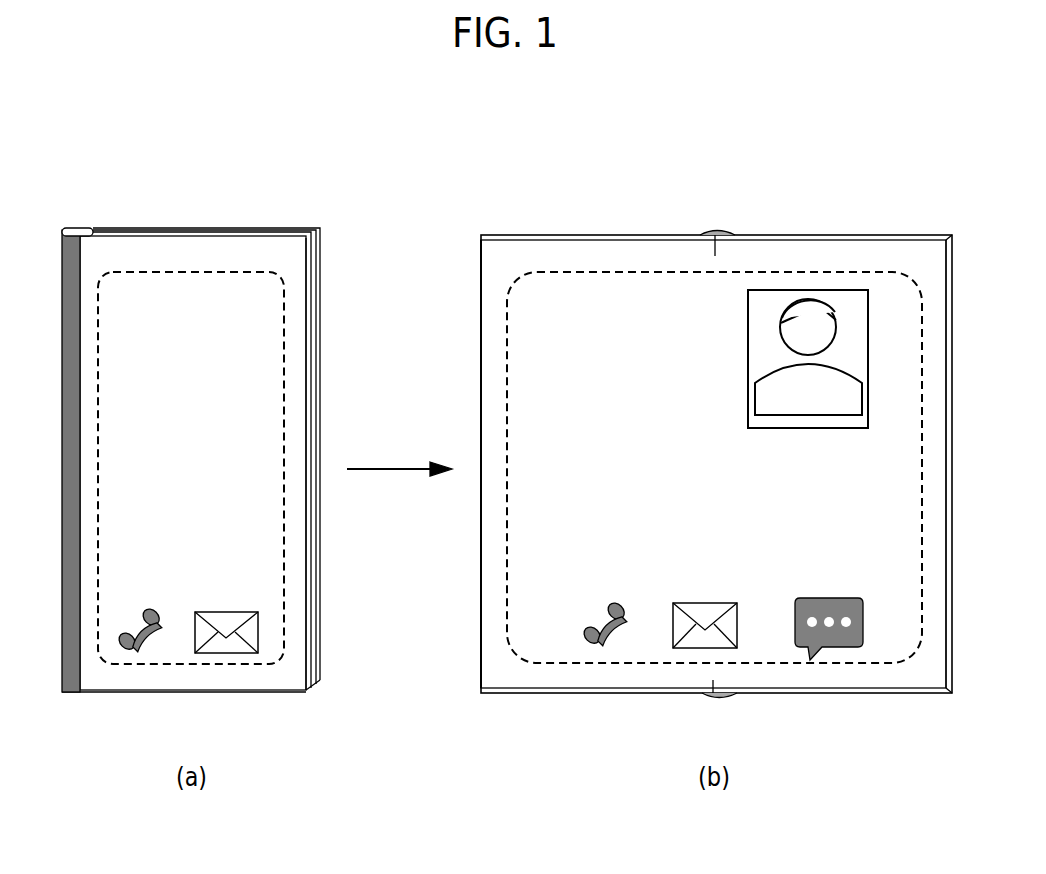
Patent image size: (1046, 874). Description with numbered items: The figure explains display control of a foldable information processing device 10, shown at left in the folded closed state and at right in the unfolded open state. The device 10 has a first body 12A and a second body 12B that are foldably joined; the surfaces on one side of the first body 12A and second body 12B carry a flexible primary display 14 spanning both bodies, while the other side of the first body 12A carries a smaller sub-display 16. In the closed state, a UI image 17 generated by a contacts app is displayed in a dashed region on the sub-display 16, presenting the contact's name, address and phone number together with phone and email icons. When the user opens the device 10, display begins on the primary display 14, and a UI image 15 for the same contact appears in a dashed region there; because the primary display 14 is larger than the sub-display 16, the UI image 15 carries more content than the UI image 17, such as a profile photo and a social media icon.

The information processing device 10 is at (226, 193).
The first body 12A is at (112, 245).
The second body 12B is at (302, 228).
The primary display 14 is at (642, 265).
The UI image 15 is at (570, 663).
The sub-display 16 is at (153, 268).
The UI image 17 is at (290, 317).